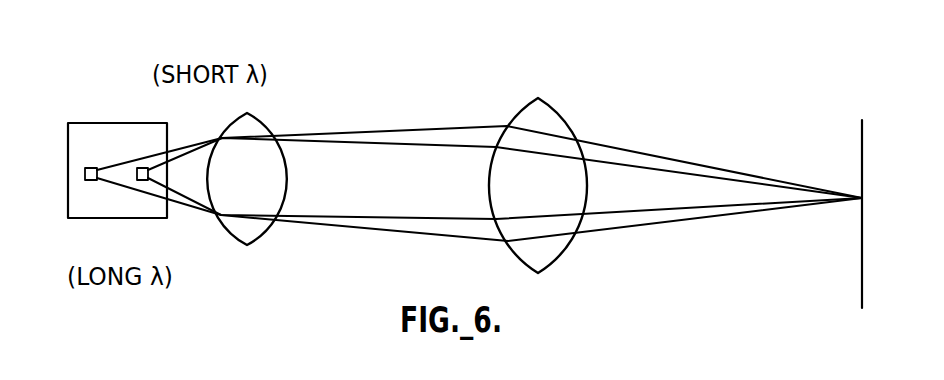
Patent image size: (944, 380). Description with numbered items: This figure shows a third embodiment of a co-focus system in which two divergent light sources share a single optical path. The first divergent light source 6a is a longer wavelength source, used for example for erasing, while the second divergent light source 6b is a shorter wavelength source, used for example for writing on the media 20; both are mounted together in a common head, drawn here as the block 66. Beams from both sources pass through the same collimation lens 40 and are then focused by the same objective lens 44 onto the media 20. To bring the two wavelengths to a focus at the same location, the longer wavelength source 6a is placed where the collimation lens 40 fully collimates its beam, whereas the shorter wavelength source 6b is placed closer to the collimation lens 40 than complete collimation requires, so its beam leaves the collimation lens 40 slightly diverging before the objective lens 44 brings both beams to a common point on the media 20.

The light source module 66 is at (90, 123).
The first divergent light source 6a is at (90, 181).
The second divergent light source 6b is at (145, 169).
The collimation lens 40 is at (247, 245).
The objective lens 44 is at (560, 117).
The media 20 is at (862, 282).